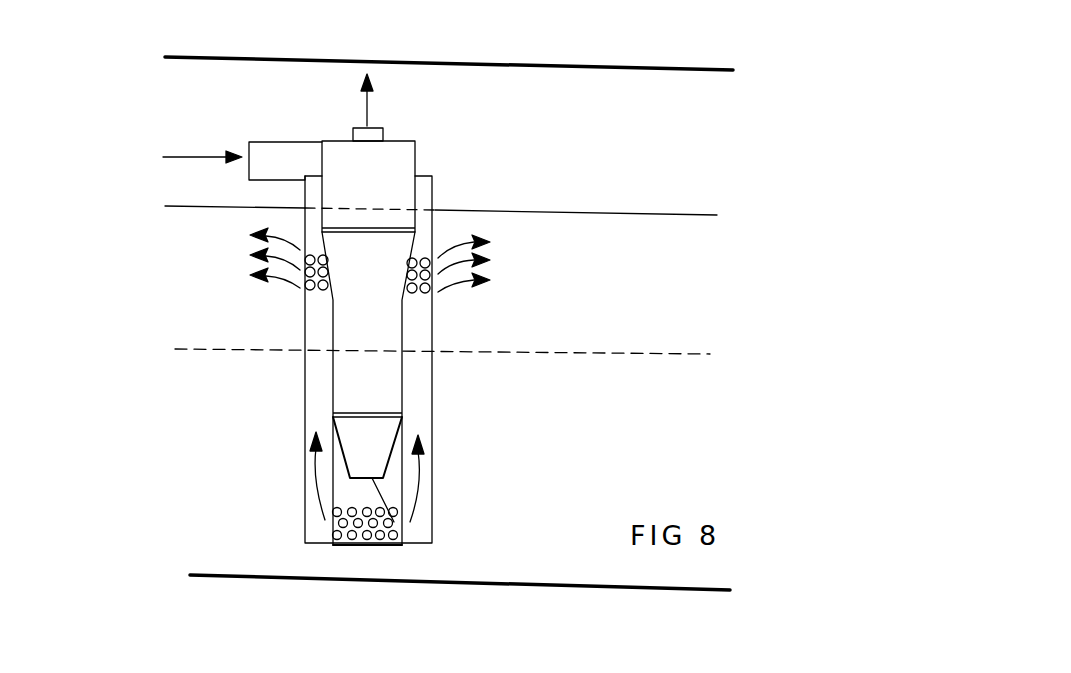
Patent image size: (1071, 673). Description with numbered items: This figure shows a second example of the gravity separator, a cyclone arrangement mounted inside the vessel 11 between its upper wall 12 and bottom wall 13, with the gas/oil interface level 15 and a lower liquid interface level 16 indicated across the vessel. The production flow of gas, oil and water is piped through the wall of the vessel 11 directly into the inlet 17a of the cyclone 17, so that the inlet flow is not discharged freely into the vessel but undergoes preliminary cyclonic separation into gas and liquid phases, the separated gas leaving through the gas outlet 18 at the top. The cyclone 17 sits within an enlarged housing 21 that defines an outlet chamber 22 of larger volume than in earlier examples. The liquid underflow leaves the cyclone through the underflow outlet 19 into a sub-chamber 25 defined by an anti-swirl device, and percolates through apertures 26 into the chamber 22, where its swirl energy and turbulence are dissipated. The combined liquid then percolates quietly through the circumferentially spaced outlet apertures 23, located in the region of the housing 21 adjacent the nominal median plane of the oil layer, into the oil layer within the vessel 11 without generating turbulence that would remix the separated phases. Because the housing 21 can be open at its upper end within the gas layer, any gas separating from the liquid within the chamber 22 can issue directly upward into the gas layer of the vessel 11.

The vessel 11 is at (692, 110).
The upper wall 12 is at (571, 66).
The bottom wall 13 is at (613, 589).
The liquid level line 15 is at (660, 213).
The lower level line 16 is at (640, 352).
The cyclone 17 is at (345, 325).
The inlet 17a is at (266, 151).
The gas outlet 18 is at (384, 126).
The underflow outlet 19 is at (402, 545).
The housing 21 is at (432, 500).
The outlet chamber 22 is at (420, 392).
The outlet apertures 23 is at (433, 292).
The sub-chamber 25 is at (388, 487).
The apertures 26 is at (330, 525).